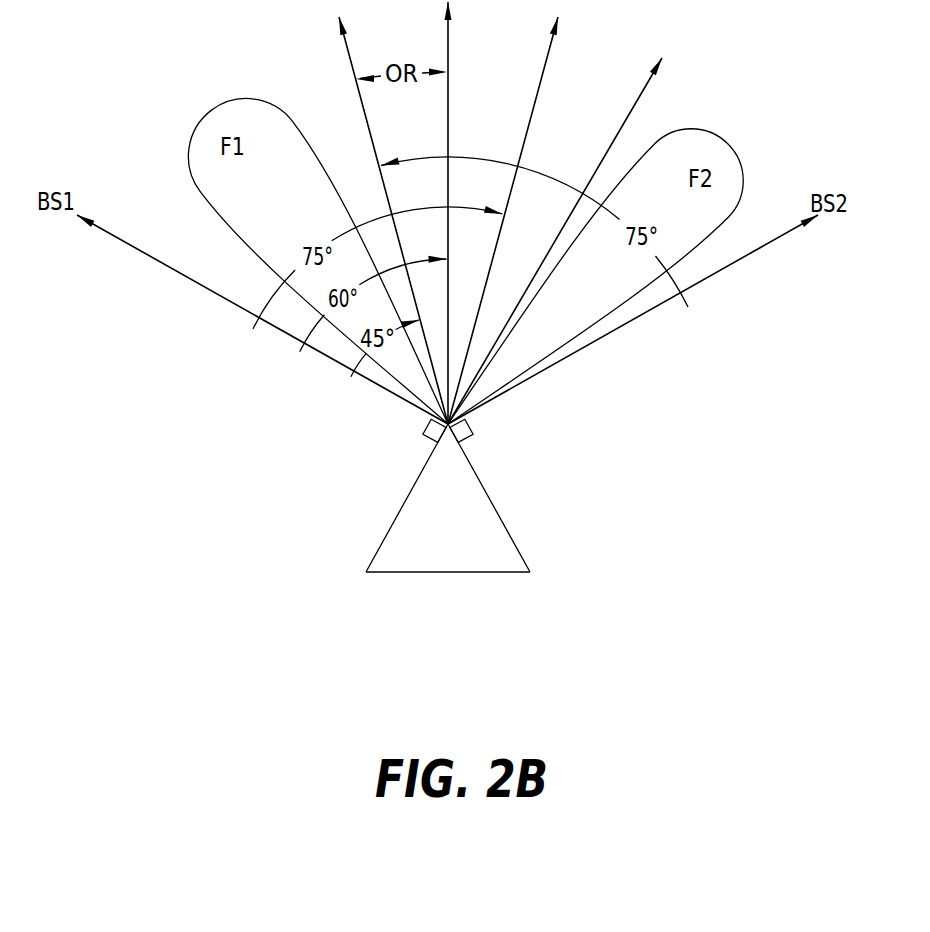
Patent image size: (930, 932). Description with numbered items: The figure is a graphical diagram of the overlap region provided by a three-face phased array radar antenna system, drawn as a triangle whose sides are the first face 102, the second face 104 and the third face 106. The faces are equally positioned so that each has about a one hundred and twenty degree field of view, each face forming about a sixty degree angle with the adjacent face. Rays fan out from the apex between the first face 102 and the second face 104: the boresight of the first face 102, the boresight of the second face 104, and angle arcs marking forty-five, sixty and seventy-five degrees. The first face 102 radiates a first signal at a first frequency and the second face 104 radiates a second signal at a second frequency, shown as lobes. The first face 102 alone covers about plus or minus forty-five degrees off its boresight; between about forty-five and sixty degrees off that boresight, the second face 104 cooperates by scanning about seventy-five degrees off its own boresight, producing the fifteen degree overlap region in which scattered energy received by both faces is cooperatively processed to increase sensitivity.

The first face 102 is at (407, 498).
The second face 104 is at (490, 498).
The third face 106 is at (447, 573).